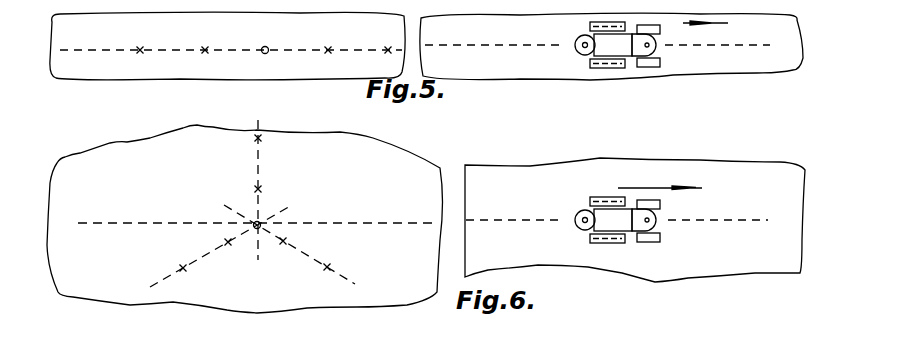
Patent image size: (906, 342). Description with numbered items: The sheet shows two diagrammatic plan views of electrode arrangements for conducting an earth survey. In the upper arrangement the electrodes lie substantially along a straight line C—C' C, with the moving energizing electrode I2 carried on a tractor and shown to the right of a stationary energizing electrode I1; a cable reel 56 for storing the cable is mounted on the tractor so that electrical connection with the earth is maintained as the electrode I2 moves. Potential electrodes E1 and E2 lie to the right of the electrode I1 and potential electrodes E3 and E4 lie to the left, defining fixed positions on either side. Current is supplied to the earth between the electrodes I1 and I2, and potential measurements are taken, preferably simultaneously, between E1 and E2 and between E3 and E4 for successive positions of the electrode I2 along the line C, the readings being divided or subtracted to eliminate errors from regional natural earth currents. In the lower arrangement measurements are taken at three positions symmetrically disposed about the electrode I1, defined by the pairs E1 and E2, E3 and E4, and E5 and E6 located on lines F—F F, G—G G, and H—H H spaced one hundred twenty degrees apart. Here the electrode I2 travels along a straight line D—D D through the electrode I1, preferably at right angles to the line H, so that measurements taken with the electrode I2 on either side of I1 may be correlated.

In FIG. 5, the cable reel 56 is at (583, 36).
In FIG. 6, the cable reel 56 is at (582, 212).
In FIG. 5, the stationary energizing electrode I1 is at (265, 46).
In FIG. 6, the stationary energizing electrode I1 is at (262, 221).
In FIG. 5, the moving energizing electrode I2 is at (640, 50).
In FIG. 6, the moving energizing electrode I2 is at (640, 222).
In FIG. 5, the potential electrode E1 is at (334, 39).
In FIG. 6, the potential electrode E1 is at (287, 240).
In FIG. 5, the potential electrode E2 is at (385, 48).
In FIG. 6, the potential electrode E2 is at (331, 266).
In FIG. 5, the potential electrode E3 is at (208, 47).
In FIG. 6, the potential electrode E3 is at (230, 246).
In FIG. 5, the potential electrode E4 is at (143, 47).
In FIG. 6, the potential electrode E4 is at (186, 271).
In FIG. 6, the potential electrode E5 is at (262, 187).
In FIG. 6, the potential electrode E6 is at (262, 140).
In FIG. 5, the straight line C—C' C is at (421, 46).
In FIG. 6, the straight line D— D is at (419, 221).
In FIG. 6, the line F— F is at (286, 244).
In FIG. 6, the line G— G is at (218, 250).
In FIG. 6, the line H— H is at (257, 190).